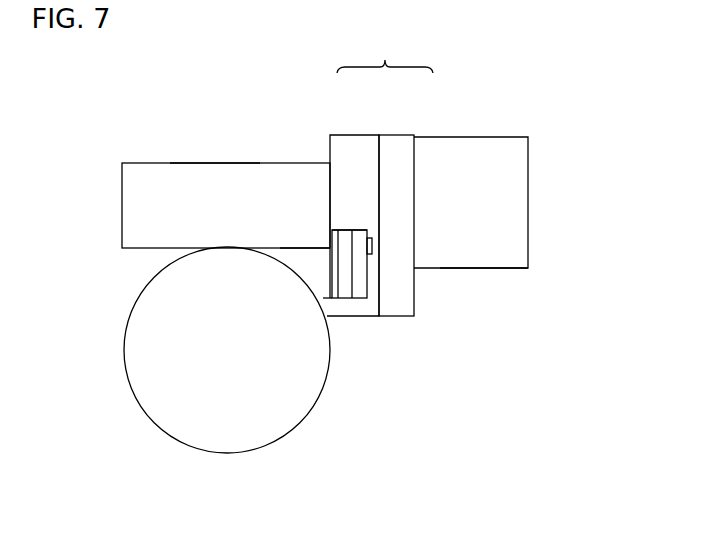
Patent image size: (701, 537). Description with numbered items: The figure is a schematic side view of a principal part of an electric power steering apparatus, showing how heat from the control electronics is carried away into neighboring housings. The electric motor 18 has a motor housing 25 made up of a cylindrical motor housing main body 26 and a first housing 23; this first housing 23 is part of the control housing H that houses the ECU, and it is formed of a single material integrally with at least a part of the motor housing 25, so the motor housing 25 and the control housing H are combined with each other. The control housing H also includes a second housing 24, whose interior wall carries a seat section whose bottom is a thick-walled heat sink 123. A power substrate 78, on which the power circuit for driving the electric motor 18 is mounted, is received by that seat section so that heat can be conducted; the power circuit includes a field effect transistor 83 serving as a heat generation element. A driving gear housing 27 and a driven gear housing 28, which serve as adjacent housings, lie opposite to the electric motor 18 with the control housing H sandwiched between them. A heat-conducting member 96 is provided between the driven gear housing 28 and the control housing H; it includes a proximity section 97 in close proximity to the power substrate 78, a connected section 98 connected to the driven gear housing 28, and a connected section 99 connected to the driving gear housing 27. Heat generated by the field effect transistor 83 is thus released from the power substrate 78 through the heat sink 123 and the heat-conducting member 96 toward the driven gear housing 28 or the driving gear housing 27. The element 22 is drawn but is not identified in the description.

The electric motor 18 is at (537, 184).
The heating member 22 is at (160, 163).
The first housing 23 is at (397, 143).
The second housing 24 is at (347, 143).
The motor housing 25 is at (480, 268).
The motor housing main body 26 is at (492, 148).
The driving gear housing 27 is at (215, 175).
The driven gear housing 28 is at (197, 430).
The power substrate 78 is at (360, 277).
The field effect transistor 83 is at (373, 246).
The heat-conducting member 96 is at (293, 247).
The proximity section 97 is at (333, 277).
The connected section 98 is at (298, 264).
The connected section 99 is at (313, 252).
The heat sink 123 is at (346, 232).
The control housing H is at (385, 49).